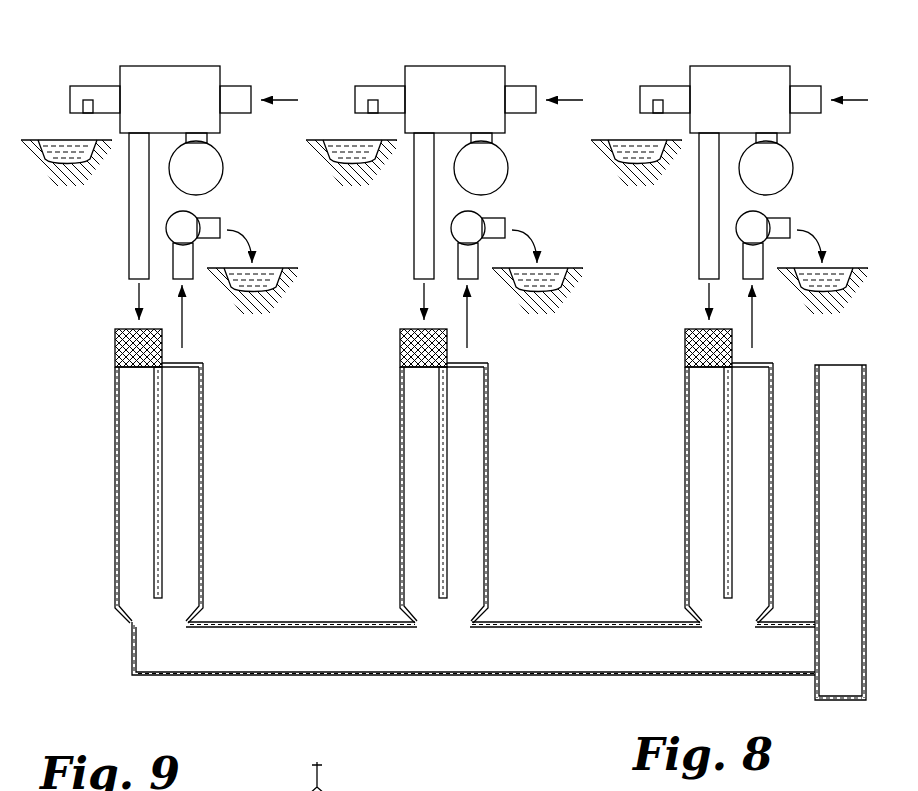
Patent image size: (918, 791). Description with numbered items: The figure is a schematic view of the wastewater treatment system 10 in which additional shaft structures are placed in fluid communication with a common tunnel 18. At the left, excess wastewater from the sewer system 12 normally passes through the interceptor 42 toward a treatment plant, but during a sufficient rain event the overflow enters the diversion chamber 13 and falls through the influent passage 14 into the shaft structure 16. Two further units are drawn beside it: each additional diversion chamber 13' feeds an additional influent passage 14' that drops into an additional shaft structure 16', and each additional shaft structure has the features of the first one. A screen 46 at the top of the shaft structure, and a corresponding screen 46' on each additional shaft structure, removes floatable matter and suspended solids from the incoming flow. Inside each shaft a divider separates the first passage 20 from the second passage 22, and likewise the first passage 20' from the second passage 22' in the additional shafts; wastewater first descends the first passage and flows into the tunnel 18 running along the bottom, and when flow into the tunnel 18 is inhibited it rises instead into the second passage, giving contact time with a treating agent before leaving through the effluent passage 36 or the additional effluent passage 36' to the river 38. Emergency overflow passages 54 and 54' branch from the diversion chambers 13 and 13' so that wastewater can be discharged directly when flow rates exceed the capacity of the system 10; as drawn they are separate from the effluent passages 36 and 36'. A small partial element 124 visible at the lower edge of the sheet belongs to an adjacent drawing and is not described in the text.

The wastewater treatment system 10 is at (73, 620).
The sewer system 12 is at (235, 77).
The diversion chamber 13 is at (174, 68).
The additional diversion chamber 13' is at (603, 68).
The influent passage 14 is at (101, 206).
The additional influent passage 14' is at (527, 206).
The shaft structure 16 is at (128, 493).
The additional shaft structure 16' is at (554, 493).
The tunnel 18 is at (290, 677).
The first passage 20 is at (107, 482).
The first passage of additional shaft structure 20' is at (533, 482).
The second passage 22 is at (214, 416).
The second passage of additional shaft structure 22' is at (628, 416).
The effluent passage 36 is at (215, 230).
The additional effluent passage 36' is at (644, 230).
The river 38 is at (59, 135).
The interceptor 42 is at (223, 167).
The screen 46 is at (107, 341).
The filter cap 46' is at (533, 341).
The emergency overflow passage 54 is at (75, 71).
The additional emergency overflow passage 54' is at (501, 71).
The support 124 is at (320, 765).